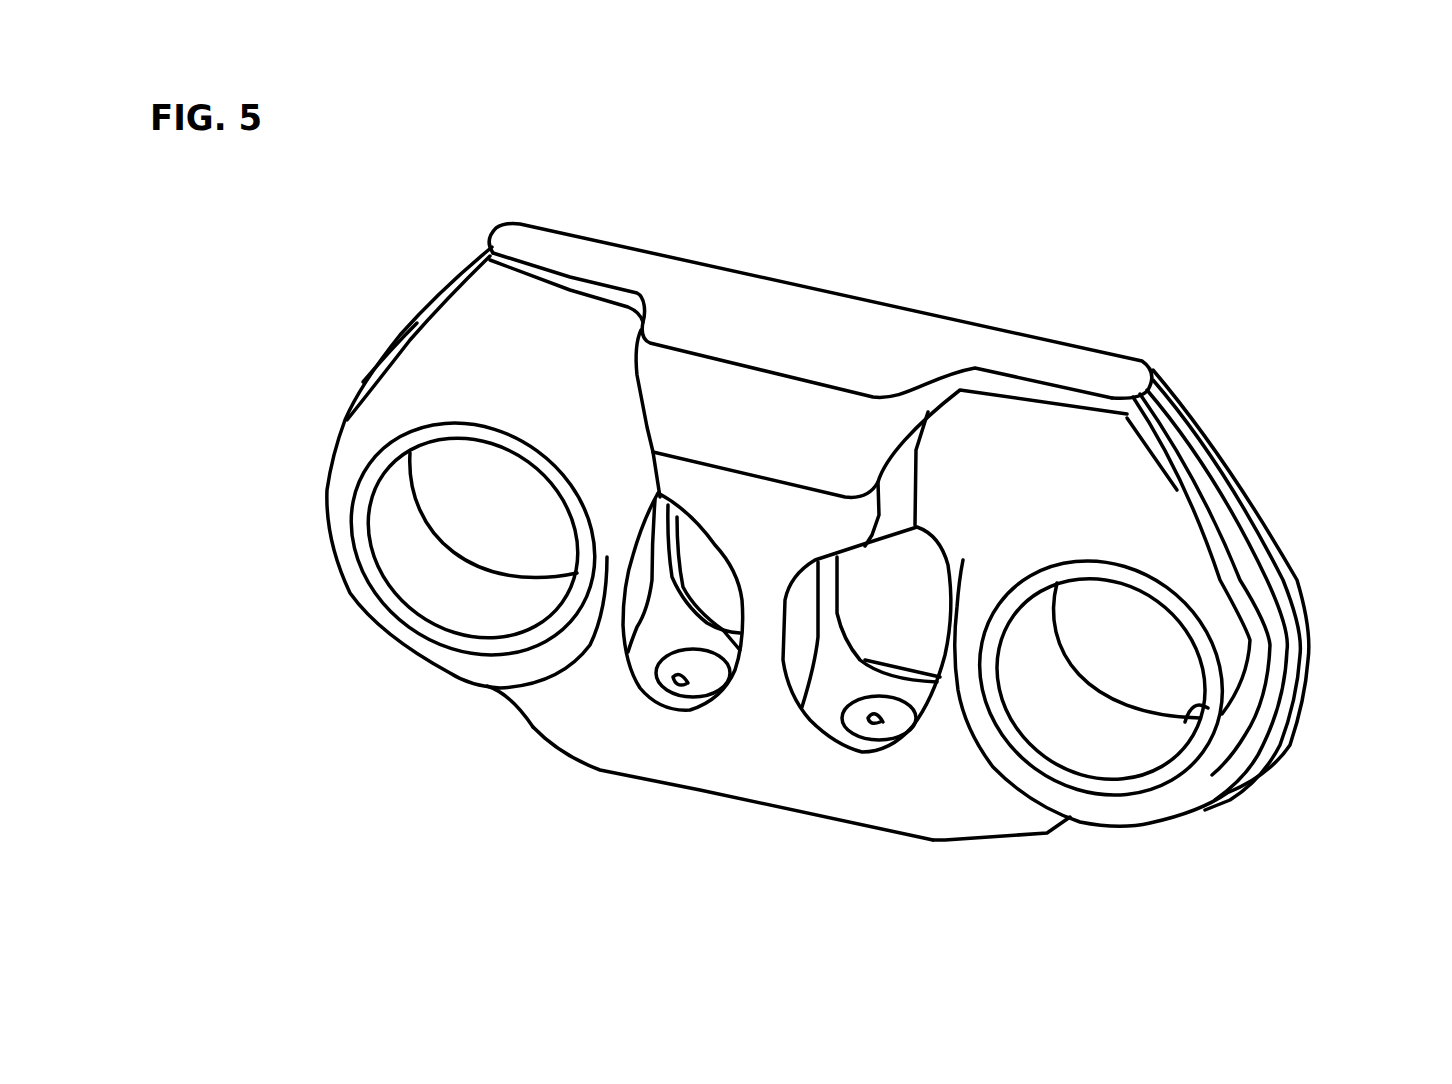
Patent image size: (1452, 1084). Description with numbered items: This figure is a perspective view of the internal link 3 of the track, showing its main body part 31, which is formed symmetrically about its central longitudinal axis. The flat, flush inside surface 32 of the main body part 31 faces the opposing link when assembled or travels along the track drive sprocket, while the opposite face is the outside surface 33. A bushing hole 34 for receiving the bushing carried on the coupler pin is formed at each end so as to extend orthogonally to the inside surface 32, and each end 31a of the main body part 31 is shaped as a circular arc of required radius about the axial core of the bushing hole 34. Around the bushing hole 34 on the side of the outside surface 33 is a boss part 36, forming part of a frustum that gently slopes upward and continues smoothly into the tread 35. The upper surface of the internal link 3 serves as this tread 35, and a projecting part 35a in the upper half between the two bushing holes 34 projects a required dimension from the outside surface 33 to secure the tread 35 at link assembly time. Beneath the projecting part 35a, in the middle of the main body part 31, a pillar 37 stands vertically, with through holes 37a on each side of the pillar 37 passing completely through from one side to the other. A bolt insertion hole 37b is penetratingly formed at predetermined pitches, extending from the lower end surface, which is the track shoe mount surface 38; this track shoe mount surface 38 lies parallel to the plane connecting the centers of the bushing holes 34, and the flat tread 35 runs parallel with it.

The internal link 3 is at (1201, 382).
The main body part 31 is at (940, 790).
The end of the main body part 31a is at (323, 488).
The inside surface 32 is at (676, 246).
The outside surface 33 is at (513, 727).
The bushing hole 34 is at (425, 598).
The tread 35 is at (1030, 340).
The projecting part 35a is at (775, 398).
The boss part 36 is at (367, 440).
The pillar 37 is at (763, 647).
The through hole 37a is at (705, 587).
The bolt insertion hole 37b is at (688, 683).
The track shoe mount surface 38 is at (1017, 837).